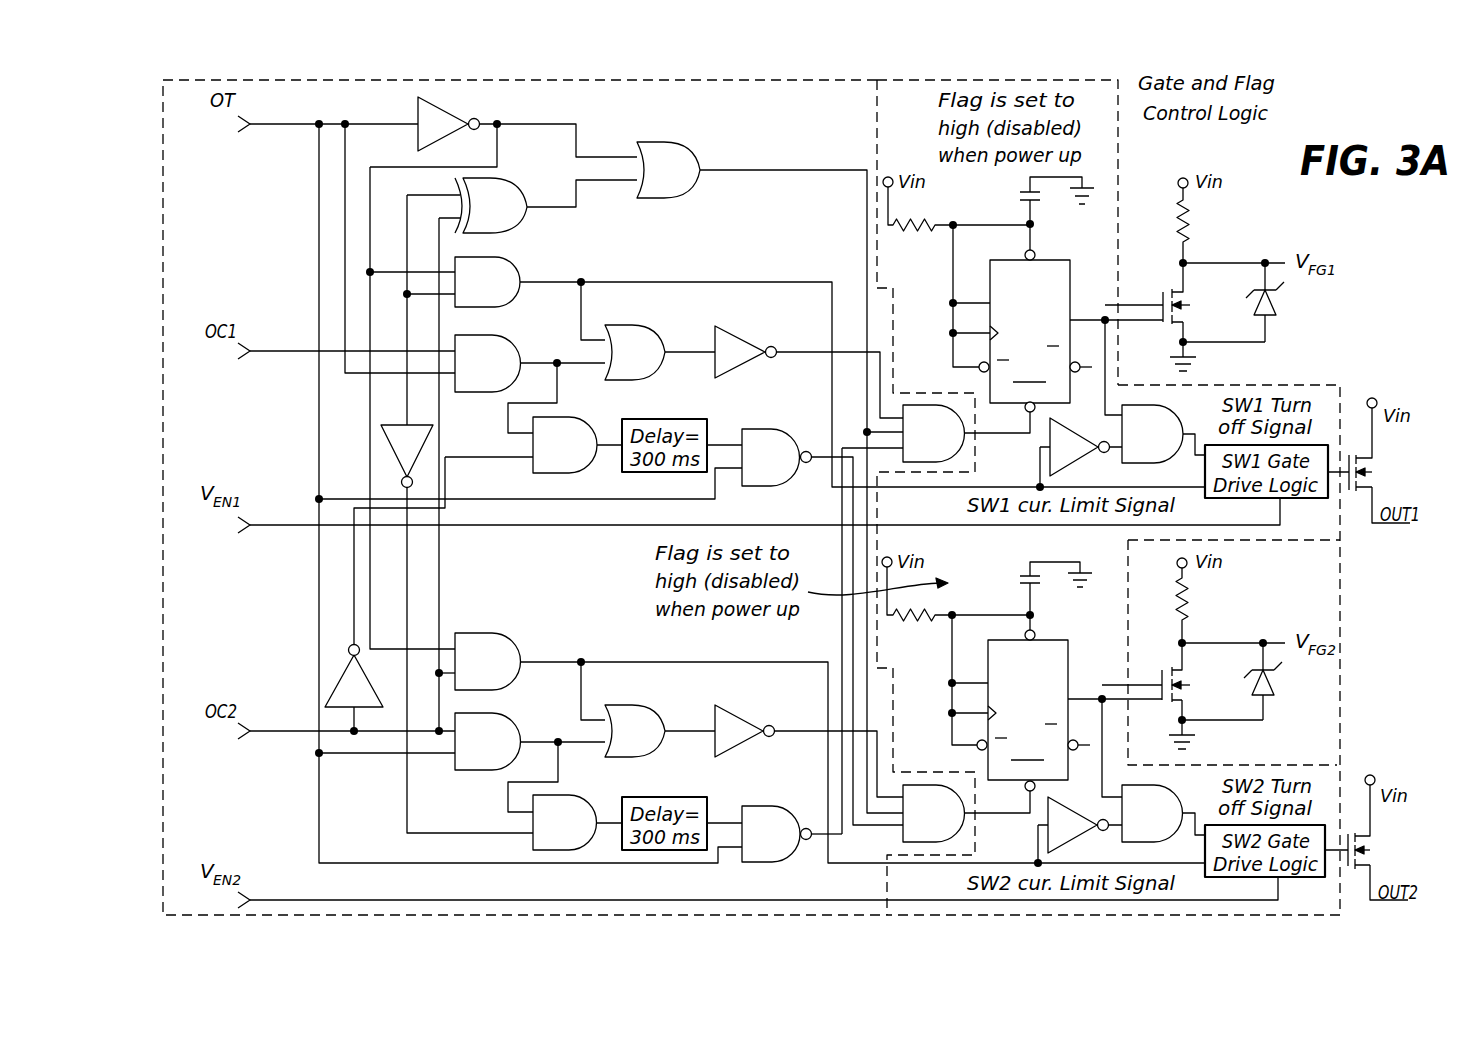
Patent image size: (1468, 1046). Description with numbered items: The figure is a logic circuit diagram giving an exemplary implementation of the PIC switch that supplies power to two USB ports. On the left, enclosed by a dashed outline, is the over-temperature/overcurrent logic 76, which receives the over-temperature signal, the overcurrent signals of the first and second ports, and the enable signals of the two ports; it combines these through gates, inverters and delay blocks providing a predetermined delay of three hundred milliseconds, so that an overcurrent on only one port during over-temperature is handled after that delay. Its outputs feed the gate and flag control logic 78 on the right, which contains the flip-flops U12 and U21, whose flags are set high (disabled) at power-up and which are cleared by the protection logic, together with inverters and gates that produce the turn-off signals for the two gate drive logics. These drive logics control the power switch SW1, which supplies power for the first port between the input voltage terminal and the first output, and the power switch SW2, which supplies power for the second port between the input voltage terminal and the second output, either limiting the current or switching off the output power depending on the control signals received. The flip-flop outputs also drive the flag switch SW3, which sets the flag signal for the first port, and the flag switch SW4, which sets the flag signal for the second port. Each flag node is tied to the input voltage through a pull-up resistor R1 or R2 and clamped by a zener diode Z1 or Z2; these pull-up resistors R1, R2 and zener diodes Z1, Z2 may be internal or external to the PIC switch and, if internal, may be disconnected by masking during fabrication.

The over-temperature/overcurrent logic 76 is at (812, 80).
The gate and flag control logic 78 is at (947, 80).
The JK flip-flop U12 is at (1041, 313).
The JK flip-flop U21 is at (1040, 698).
The pull-up resistor R1 is at (1197, 225).
The pull-up resistor R2 is at (1197, 605).
The zener diode Z1 is at (1282, 302).
The zener diode Z2 is at (1281, 681).
The switch SW1 is at (1370, 465).
The switch SW2 is at (1367, 842).
The switch SW3 is at (1170, 306).
The switch SW4 is at (1168, 684).